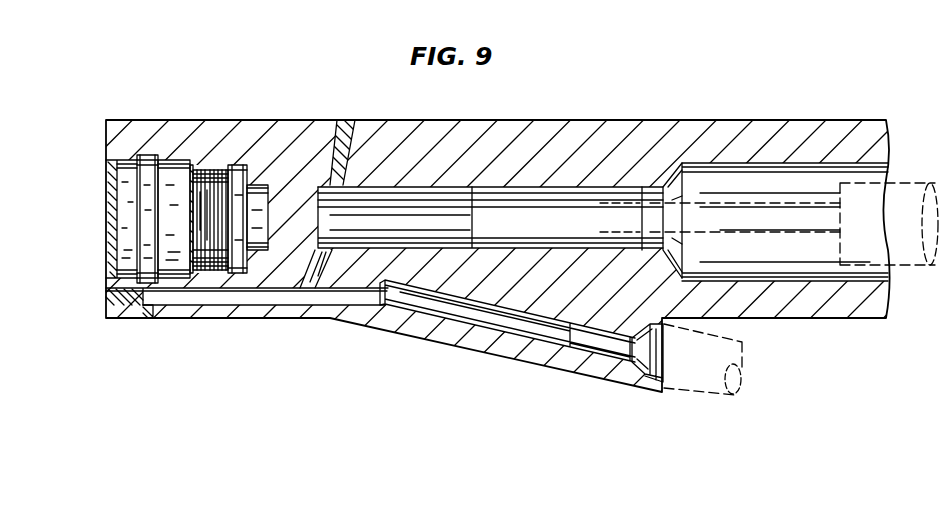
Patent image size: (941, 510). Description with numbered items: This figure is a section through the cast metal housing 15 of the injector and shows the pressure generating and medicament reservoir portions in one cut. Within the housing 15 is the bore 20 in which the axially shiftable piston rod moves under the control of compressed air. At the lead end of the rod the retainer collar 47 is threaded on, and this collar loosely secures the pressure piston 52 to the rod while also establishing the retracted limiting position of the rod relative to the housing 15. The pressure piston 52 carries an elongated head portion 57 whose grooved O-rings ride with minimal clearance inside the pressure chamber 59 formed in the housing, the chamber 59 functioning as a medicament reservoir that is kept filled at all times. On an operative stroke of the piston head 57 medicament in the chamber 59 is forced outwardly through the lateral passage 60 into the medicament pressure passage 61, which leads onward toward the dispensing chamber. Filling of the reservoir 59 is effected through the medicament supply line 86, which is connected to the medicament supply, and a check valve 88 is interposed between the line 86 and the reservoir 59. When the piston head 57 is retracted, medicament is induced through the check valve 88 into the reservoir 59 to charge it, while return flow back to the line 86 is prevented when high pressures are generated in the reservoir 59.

The housing 15 is at (472, 346).
The bore 20 is at (720, 163).
The retainer collar 47 is at (921, 187).
The pressure piston 52 is at (761, 230).
The elongated head portion 57 is at (486, 222).
The pressure chamber 59 is at (560, 187).
The lateral passage 60 is at (306, 279).
The medicament pressure passage 61 is at (225, 302).
The medicament supply line 86 is at (712, 388).
The check valve 88 is at (619, 364).